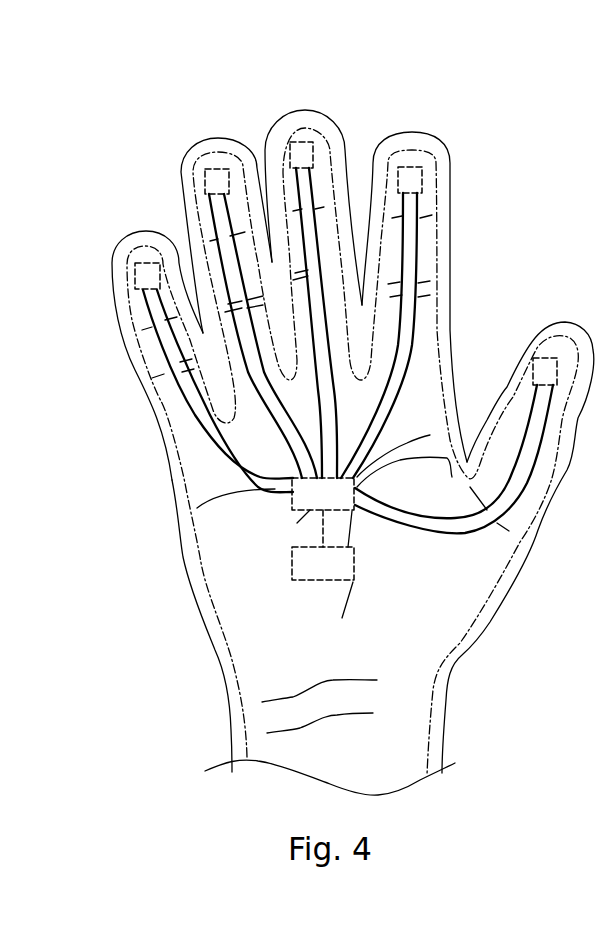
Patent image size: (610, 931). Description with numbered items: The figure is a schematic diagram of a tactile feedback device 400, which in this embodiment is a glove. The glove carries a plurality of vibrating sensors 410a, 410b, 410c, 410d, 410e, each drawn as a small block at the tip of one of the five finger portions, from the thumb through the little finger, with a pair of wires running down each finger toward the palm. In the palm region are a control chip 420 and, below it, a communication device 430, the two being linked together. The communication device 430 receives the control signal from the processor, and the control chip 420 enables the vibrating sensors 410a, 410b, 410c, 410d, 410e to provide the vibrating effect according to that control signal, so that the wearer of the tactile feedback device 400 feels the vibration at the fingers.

The tactile feedback device 400 is at (63, 66).
The vibrating sensor 410a is at (547, 358).
The vibrating sensor 410b is at (412, 167).
The vibrating sensor 410c is at (303, 142).
The vibrating sensor 410d is at (219, 168).
The vibrating sensor 410e is at (150, 263).
The control chip 420 is at (293, 505).
The communication device 430 is at (293, 563).